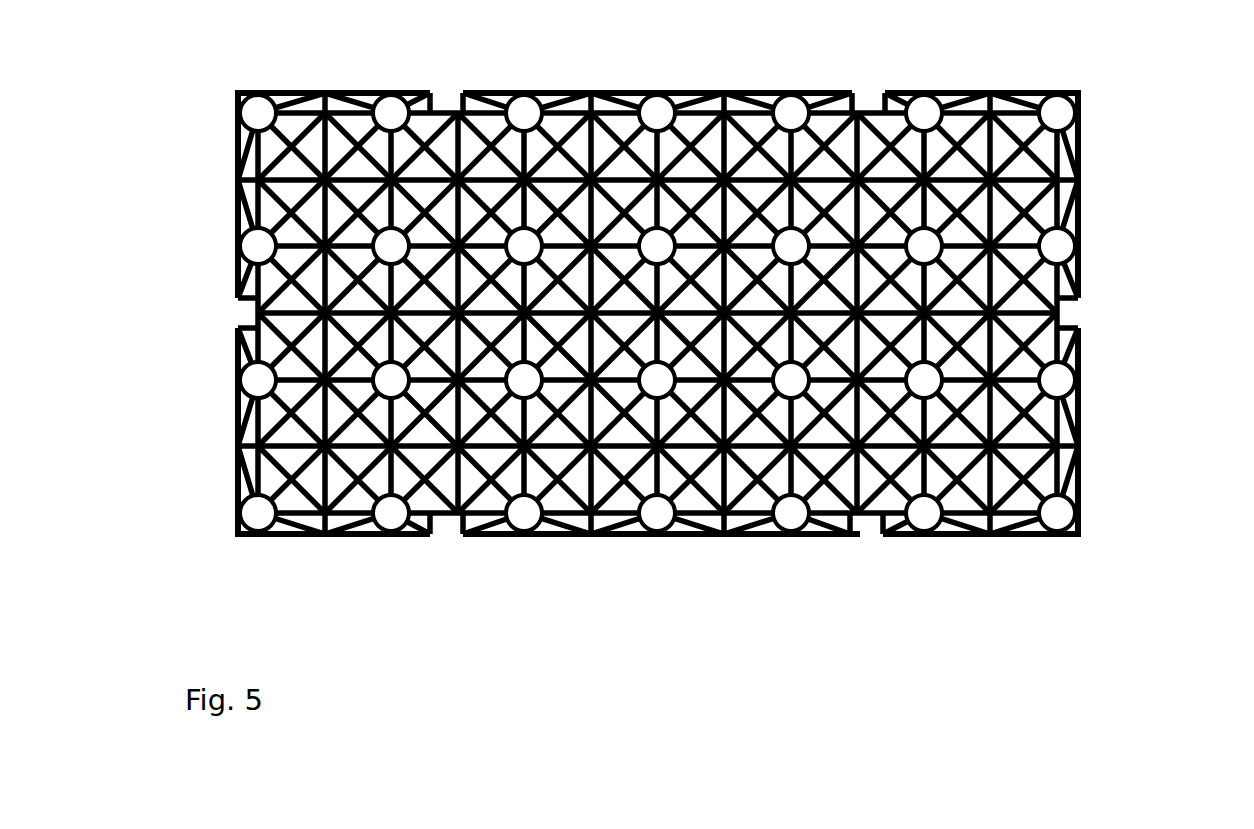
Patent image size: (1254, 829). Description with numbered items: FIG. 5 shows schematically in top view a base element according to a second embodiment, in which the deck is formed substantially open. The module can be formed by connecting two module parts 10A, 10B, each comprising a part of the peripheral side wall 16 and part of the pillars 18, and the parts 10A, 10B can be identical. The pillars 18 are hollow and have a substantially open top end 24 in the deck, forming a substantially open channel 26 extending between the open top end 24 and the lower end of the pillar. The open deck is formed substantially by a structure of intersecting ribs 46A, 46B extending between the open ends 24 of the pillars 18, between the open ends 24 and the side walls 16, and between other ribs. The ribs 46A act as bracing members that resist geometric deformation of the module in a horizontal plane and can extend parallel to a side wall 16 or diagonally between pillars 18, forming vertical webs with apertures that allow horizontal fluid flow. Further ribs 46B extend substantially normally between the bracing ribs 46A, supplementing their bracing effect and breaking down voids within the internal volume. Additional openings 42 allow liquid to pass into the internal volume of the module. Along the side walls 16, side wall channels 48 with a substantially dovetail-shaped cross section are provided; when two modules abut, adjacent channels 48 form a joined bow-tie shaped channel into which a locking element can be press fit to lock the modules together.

The module part 10A is at (703, 314).
The module part 10B is at (703, 314).
The peripheral side wall 16 is at (757, 90).
The pillar 18 is at (365, 92).
The open top end 24 is at (923, 113).
The open channel 26 is at (525, 120).
The opening 42 is at (507, 150).
The rib 46A is at (1052, 150).
The further rib 46B is at (595, 138).
The side wall channel 48 is at (447, 100).